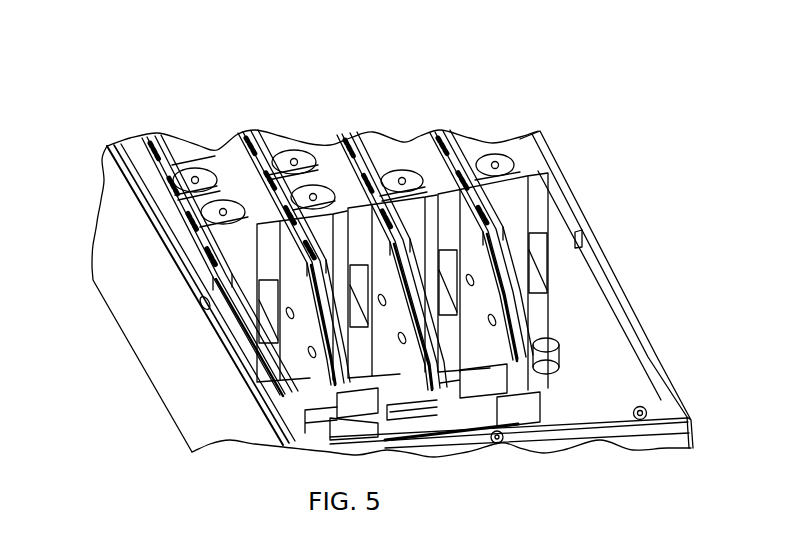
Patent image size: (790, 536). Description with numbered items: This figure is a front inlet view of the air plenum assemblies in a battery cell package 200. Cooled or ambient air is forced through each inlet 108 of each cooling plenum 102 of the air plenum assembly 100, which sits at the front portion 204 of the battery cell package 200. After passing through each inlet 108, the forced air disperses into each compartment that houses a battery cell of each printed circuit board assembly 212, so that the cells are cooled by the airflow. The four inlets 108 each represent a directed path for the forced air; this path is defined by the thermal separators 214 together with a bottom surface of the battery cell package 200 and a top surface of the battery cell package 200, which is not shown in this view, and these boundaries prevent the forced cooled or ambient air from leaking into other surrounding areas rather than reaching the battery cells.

The battery cell package 200 is at (391, 293).
The printed circuit board assembly 212 is at (445, 157).
The air plenum assembly 100 is at (532, 155).
The thermal separator 214 is at (513, 192).
The inlet 108 is at (542, 260).
The cooling plenum 102 is at (552, 283).
The front portion 204 is at (663, 441).